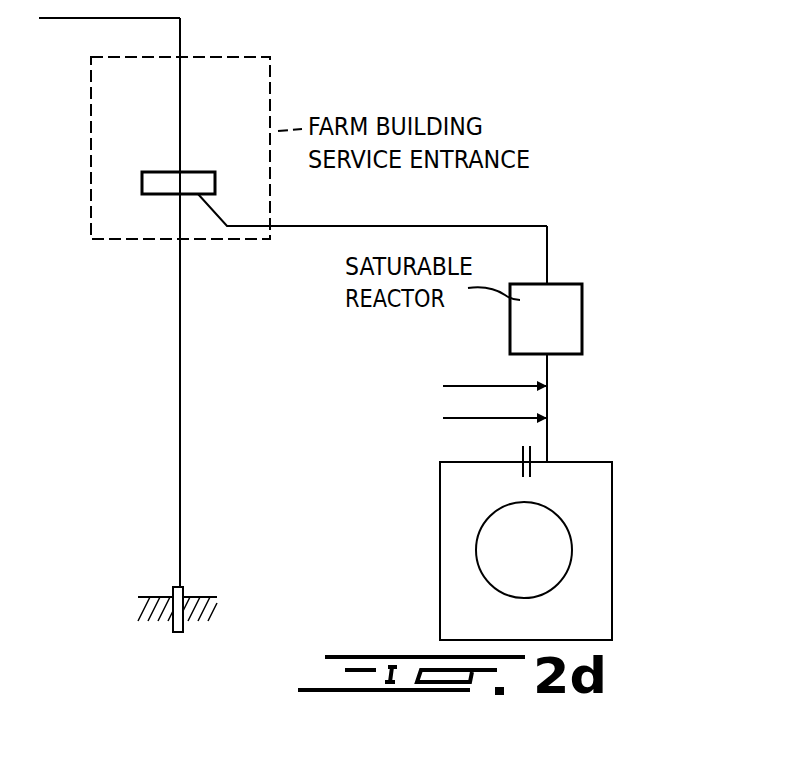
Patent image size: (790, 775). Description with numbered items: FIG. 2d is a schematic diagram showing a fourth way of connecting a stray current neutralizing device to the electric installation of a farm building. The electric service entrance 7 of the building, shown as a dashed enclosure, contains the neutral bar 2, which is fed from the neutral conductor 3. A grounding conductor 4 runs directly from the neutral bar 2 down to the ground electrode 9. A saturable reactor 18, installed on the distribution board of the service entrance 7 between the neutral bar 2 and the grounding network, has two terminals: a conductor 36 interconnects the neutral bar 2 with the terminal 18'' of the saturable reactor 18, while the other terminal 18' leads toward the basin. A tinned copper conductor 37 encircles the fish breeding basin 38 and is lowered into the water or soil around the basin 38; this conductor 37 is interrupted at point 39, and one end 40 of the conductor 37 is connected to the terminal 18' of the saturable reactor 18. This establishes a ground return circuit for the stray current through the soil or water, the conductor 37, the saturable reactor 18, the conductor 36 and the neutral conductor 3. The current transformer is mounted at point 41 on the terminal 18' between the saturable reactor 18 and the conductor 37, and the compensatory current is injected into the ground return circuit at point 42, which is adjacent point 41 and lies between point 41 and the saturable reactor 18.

The neutral bar 2 is at (152, 176).
The neutral conductor 3 is at (180, 30).
The grounding conductor 4 is at (178, 341).
The electric service entrance 7 is at (273, 76).
The ground electrode 9 is at (186, 617).
The saturable reactor 18 is at (571, 319).
The terminal of the saturable reactor 18' is at (499, 406).
The terminal of the saturable reactor 18'' is at (579, 253).
The conductor 36 is at (425, 226).
The tinned copper conductor 37 is at (612, 490).
The fish breeding basin 38 is at (556, 556).
The point of interruption 39 is at (518, 441).
The end of the conductor 40 is at (553, 452).
The point 41 is at (479, 417).
The point 42 is at (479, 385).